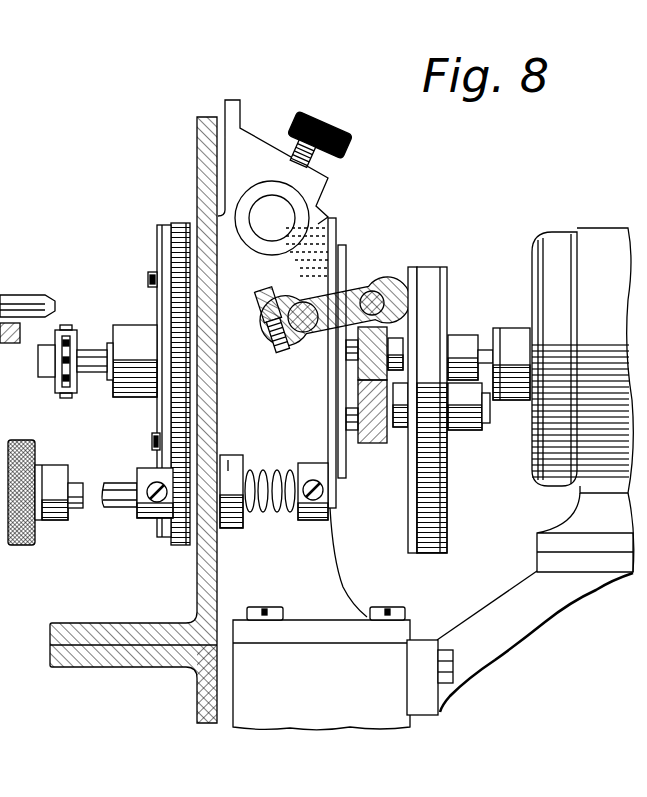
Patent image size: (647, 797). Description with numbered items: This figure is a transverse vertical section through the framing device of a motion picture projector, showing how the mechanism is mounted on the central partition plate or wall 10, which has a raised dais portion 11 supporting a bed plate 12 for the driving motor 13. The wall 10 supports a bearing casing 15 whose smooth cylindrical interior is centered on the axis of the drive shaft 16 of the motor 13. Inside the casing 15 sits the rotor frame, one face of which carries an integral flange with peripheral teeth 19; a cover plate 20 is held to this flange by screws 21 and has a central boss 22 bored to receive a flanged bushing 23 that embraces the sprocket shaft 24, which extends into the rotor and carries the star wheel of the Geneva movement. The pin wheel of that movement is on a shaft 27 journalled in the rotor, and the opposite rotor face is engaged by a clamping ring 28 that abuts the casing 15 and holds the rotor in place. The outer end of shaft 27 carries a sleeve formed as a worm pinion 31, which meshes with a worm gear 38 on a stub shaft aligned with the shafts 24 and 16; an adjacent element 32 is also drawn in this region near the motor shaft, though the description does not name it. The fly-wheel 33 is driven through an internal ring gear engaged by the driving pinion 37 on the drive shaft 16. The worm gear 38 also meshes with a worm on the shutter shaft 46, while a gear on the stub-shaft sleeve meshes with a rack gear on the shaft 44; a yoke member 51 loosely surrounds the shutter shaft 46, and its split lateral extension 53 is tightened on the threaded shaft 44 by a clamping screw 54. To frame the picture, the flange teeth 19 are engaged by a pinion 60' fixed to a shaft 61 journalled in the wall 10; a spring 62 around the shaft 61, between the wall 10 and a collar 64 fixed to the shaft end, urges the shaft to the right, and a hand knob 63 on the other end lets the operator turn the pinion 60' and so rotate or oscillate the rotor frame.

The central partition plate or wall 10 is at (197, 162).
The raised dais portion 11 is at (526, 574).
The bed plate 12 is at (543, 542).
The driving motor 13 is at (547, 243).
The bearing casing 15 is at (328, 219).
The drive shaft 16 is at (485, 347).
The peripheral teeth 19 is at (178, 223).
The cover plate 20 is at (158, 241).
The screws 21 is at (148, 278).
The central boss 22 is at (130, 326).
The flanged bushing 23 is at (110, 383).
The sprocket shaft 24 is at (88, 357).
The shaft 27 is at (478, 422).
The clamping ring or plate 28 is at (342, 480).
The worm pinion 31 is at (348, 475).
The gear 32 is at (462, 448).
The fly-wheel 33 is at (427, 277).
The driving pinion 37 is at (458, 341).
The worm gear 38 is at (387, 333).
The shaft 44 is at (310, 350).
The shutter shaft 46 is at (372, 269).
The yoke member 51 is at (404, 266).
The lateral extension 53 is at (306, 301).
The clamping screw 54 is at (270, 278).
The pinion 60' is at (163, 521).
The shaft 61 is at (113, 484).
The spring 62 is at (265, 468).
The hand knob 63 is at (50, 464).
The collar 64 is at (311, 465).